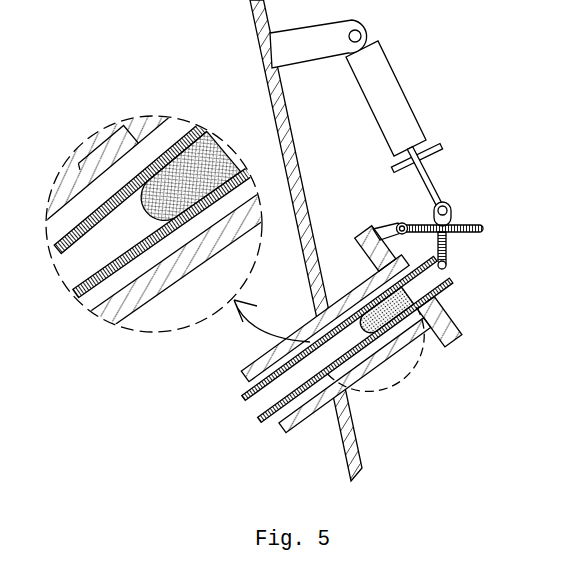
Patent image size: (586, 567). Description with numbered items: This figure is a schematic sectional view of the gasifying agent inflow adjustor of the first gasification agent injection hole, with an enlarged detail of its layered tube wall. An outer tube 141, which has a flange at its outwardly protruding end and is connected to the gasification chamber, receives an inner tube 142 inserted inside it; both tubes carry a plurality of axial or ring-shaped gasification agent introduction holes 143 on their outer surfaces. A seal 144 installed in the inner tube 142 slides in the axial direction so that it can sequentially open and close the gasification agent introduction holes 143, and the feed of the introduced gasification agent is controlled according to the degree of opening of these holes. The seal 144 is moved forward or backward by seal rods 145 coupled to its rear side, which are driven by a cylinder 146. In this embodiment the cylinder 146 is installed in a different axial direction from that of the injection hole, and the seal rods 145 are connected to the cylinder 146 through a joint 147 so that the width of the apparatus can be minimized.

The outer tube 141 is at (365, 366).
The inner tube 142 is at (250, 410).
The gasification agent introduction holes 143 is at (86, 216).
The seal 144 is at (177, 178).
The seal rods 145 is at (445, 247).
The cylinder 146 is at (407, 112).
The joint 147 is at (446, 268).